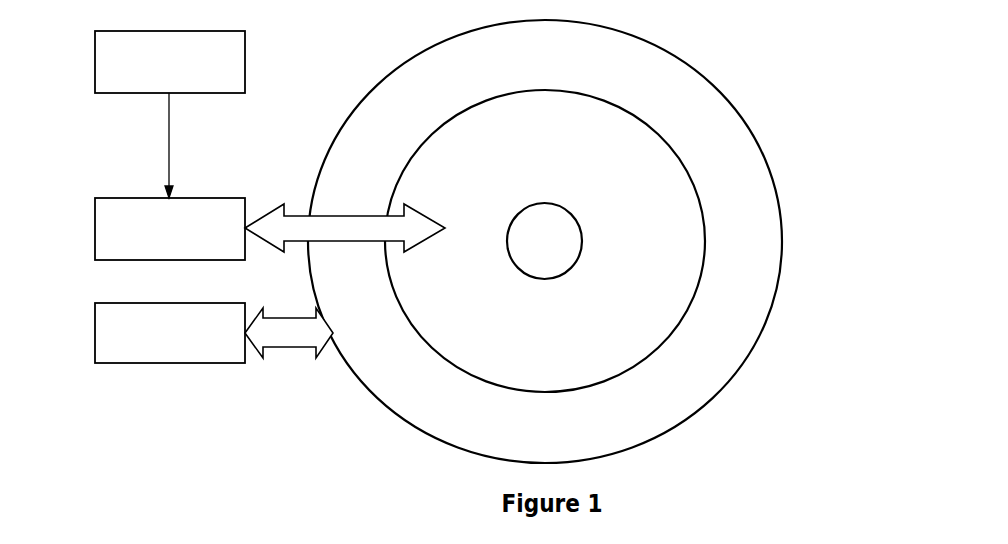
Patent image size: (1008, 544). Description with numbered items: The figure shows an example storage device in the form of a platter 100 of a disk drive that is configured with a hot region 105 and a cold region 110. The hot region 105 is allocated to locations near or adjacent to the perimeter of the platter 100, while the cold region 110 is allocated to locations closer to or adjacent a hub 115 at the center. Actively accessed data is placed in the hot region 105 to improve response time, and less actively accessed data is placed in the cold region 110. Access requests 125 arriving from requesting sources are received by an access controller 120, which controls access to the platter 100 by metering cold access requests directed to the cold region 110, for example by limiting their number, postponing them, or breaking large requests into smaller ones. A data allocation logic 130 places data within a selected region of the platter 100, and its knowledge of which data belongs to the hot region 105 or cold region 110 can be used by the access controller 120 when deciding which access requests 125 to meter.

The platter 100 is at (712, 55).
The hot region 105 is at (667, 105).
The cold region 110 is at (625, 308).
The hub 115 is at (582, 241).
The access controller 120 is at (94, 228).
The access requests 125 is at (94, 61).
The data allocation logic 130 is at (94, 333).